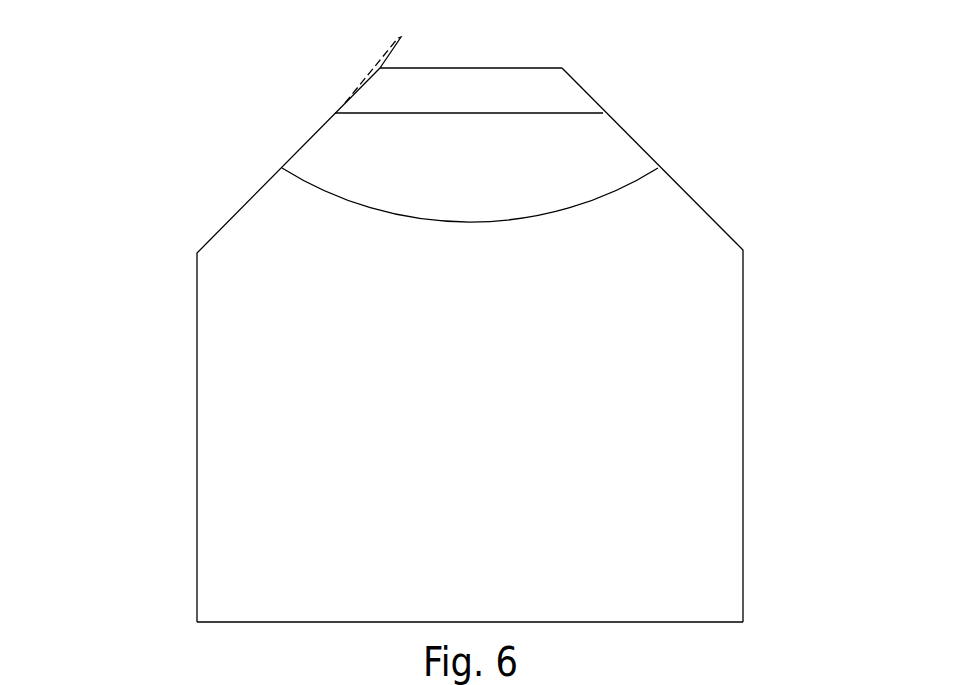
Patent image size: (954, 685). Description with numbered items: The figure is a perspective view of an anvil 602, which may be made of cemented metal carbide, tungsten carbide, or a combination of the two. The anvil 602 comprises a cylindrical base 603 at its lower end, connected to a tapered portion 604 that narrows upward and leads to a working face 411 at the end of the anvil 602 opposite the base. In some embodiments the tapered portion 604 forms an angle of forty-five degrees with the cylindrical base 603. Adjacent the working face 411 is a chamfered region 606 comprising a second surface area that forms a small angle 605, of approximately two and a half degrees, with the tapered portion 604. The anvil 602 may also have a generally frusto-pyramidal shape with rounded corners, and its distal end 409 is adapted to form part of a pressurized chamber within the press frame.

The distal end 409 is at (530, 48).
The working face 411 is at (553, 67).
The anvil 602 is at (838, 167).
The cylindrical base 603 is at (247, 622).
The tapered portion 604 is at (736, 244).
The angle 605 is at (400, 37).
The chamfered region 606 is at (588, 93).